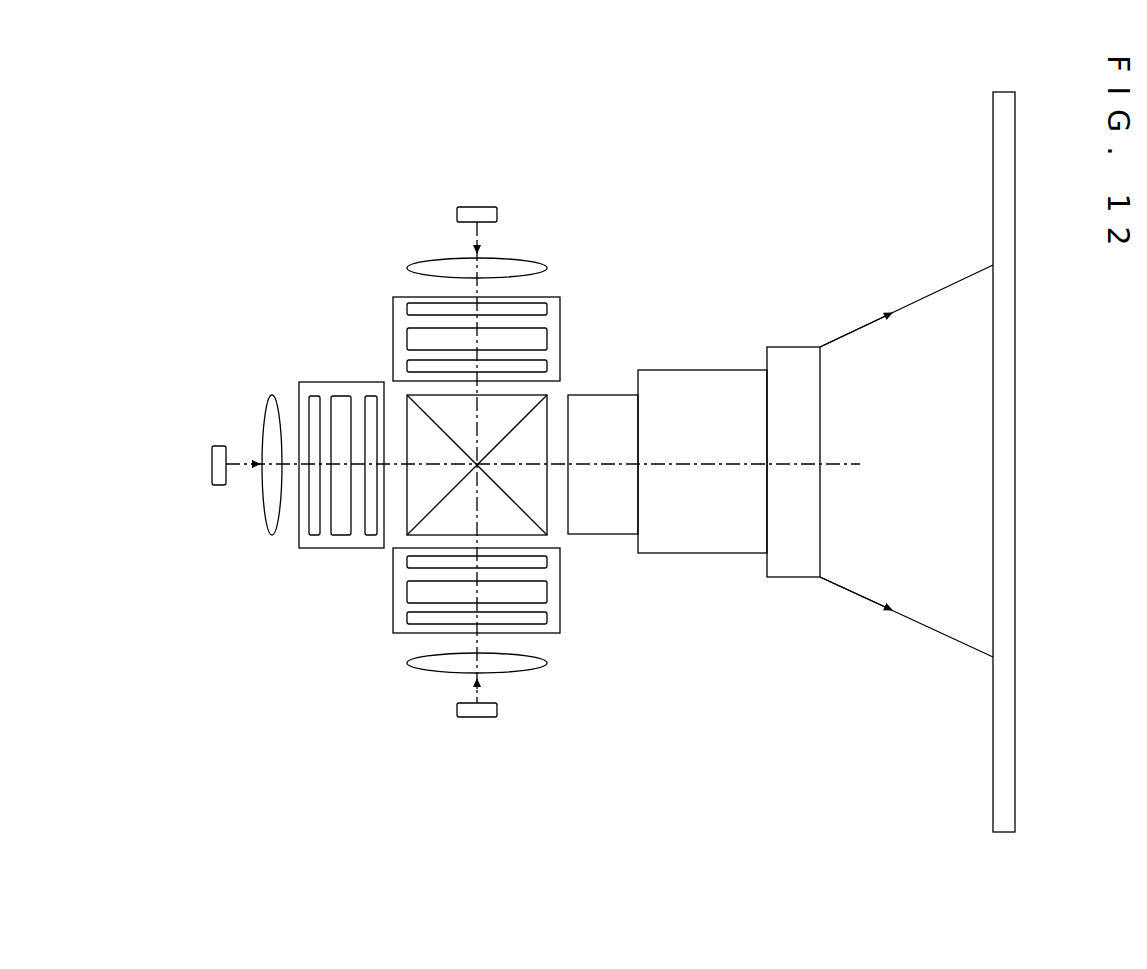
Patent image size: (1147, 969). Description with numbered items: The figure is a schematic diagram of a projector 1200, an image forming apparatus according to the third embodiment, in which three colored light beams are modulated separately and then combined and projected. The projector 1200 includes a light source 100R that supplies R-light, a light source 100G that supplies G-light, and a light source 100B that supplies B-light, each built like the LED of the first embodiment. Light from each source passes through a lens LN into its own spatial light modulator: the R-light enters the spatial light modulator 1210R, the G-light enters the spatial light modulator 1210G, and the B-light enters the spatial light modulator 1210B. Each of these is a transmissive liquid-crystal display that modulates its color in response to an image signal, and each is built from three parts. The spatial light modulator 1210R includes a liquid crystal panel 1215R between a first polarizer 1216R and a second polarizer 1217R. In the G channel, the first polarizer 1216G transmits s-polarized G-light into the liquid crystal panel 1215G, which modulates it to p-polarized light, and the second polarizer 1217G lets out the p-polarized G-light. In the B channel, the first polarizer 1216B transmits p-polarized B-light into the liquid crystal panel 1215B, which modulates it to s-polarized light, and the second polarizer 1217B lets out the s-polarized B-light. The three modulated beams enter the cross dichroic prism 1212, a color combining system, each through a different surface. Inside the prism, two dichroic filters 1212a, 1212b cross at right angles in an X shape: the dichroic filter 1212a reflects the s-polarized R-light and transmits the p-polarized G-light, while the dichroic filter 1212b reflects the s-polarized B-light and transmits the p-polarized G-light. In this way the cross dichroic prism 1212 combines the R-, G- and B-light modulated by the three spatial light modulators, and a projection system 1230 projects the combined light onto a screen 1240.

The projector 1200 is at (789, 160).
The light source 100R is at (497, 212).
The light source 100G is at (215, 445).
The light source 100B is at (497, 708).
The lens LN is at (265, 505).
The spatial light modulator 1210R is at (560, 297).
The spatial light modulator 1210G is at (297, 383).
The spatial light modulator 1210B is at (560, 634).
The liquid crystal panel 1215R is at (547, 339).
The liquid crystal panel 1215G is at (339, 397).
The liquid crystal panel 1215B is at (547, 591).
The first polarizer 1216R is at (547, 309).
The first polarizer 1216G is at (312, 397).
The first polarizer 1216B is at (547, 620).
The second polarizer 1217R is at (547, 366).
The second polarizer 1217G is at (369, 396).
The second polarizer 1217B is at (547, 562).
The cross dichroic prism 1212 is at (537, 418).
The dichroic filter 1212a is at (540, 518).
The dichroic filter 1212b is at (413, 533).
The projection system 1230 is at (800, 578).
The screen 1240 is at (993, 737).